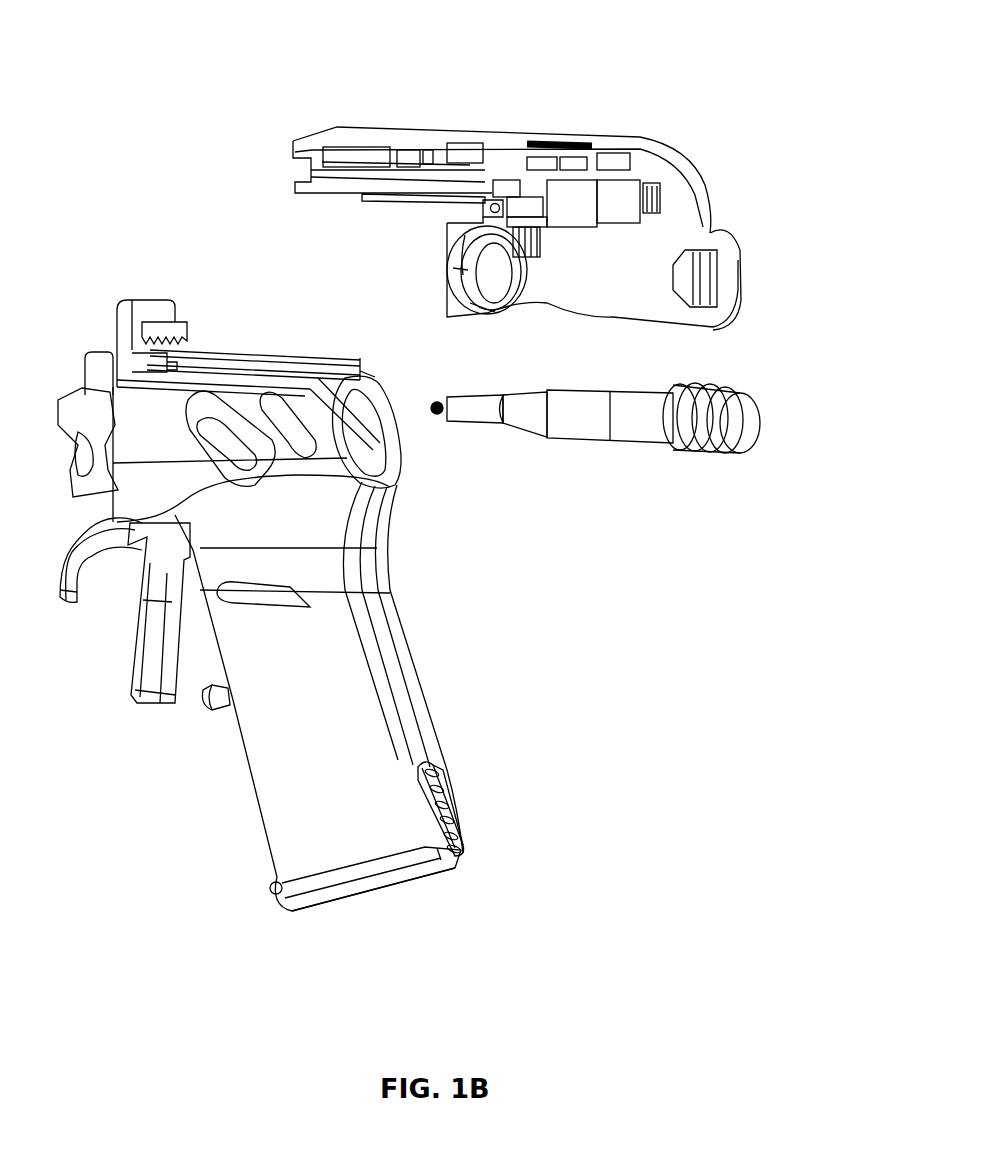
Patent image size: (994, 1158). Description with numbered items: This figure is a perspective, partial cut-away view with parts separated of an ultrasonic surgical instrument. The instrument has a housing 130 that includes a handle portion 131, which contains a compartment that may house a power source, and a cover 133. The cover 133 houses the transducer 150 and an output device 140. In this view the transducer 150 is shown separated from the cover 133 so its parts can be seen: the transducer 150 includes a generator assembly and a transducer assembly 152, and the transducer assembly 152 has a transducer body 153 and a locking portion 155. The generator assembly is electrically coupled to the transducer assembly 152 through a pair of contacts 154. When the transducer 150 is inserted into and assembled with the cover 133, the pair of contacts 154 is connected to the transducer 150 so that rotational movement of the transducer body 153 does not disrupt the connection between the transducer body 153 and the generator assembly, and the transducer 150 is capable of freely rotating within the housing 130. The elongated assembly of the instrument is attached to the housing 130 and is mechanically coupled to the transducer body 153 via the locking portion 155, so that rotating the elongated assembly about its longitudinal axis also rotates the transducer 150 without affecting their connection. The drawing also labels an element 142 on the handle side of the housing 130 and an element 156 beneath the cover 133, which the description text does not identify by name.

The housing 130 is at (332, 589).
The handle portion 131 is at (430, 691).
The cover 133 is at (709, 192).
The output device 140 is at (557, 207).
The upper body / slide 142 is at (224, 335).
The transducer 150 is at (621, 299).
The transducer assembly 152 is at (475, 140).
The transducer body 153 is at (698, 442).
The pair of contacts 154 is at (548, 243).
The locking portion 155 is at (439, 424).
The mounting plate 156 is at (388, 210).